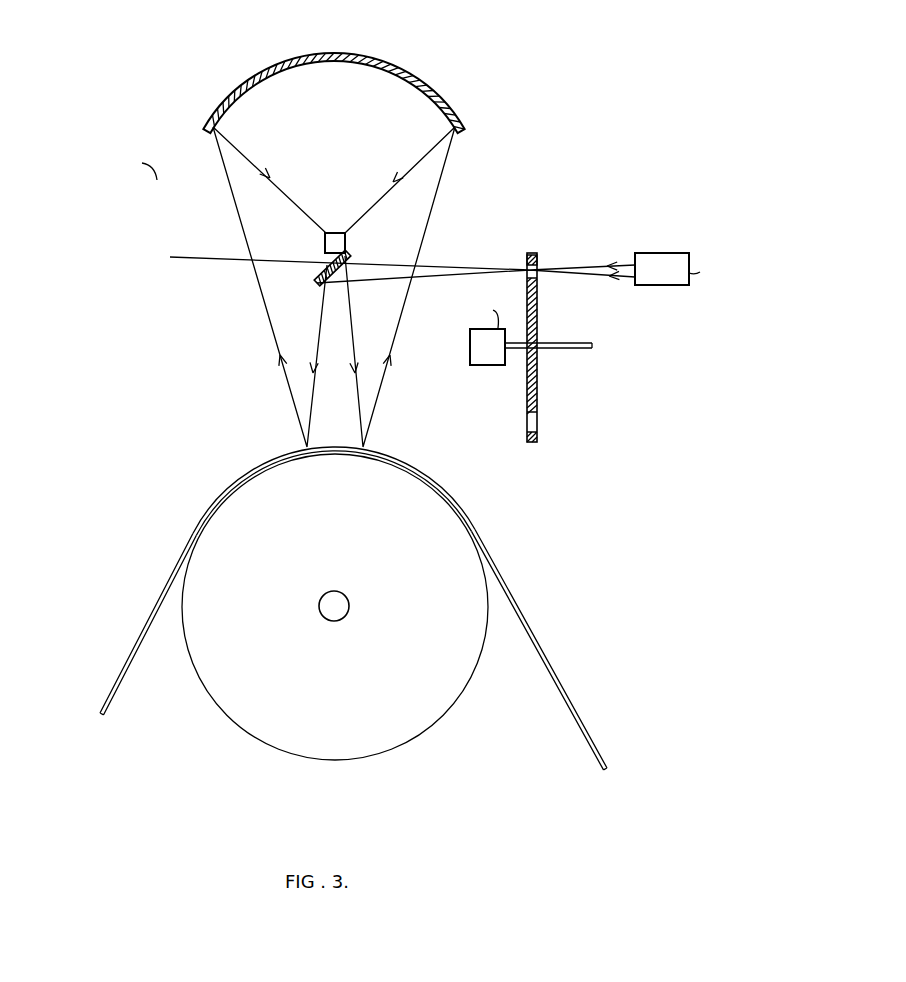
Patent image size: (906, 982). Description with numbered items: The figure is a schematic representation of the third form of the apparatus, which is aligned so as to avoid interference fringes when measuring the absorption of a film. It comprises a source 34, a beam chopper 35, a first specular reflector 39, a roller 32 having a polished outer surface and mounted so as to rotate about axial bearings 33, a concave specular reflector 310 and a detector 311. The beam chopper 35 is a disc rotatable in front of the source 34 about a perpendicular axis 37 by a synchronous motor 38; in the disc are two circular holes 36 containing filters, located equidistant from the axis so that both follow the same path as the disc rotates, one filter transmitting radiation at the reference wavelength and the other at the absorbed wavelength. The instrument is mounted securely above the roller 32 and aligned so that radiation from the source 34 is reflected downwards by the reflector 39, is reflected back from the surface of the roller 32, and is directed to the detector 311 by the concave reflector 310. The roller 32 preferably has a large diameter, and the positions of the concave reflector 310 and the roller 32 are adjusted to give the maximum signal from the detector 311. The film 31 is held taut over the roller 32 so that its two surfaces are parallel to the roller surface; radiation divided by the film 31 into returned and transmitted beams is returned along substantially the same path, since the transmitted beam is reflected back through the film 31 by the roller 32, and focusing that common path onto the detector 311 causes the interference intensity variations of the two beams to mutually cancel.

The concave specular reflector 310 is at (420, 82).
The detector 311 is at (323, 238).
The first specular reflector 39 is at (316, 262).
The source 34 is at (670, 263).
The beam chopper 35 is at (538, 380).
The circular holes 36 is at (537, 262).
The perpendicular axis 37 is at (587, 343).
The synchronous motor 38 is at (480, 353).
The roller 32 is at (275, 715).
The axial bearings 33 is at (332, 617).
The film 31 is at (557, 673).